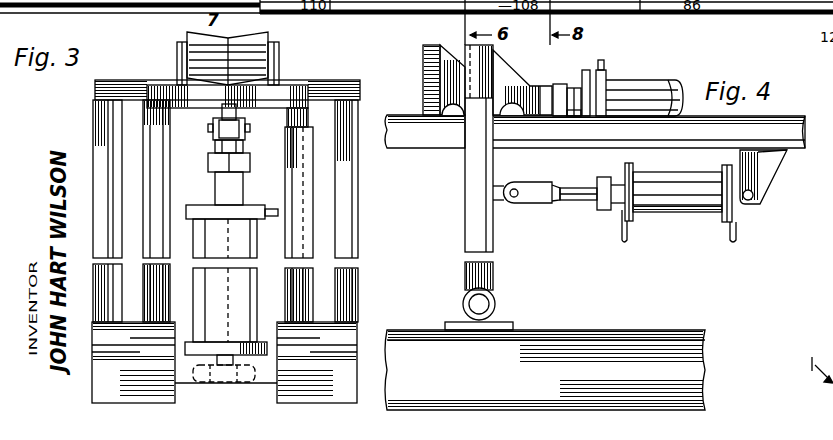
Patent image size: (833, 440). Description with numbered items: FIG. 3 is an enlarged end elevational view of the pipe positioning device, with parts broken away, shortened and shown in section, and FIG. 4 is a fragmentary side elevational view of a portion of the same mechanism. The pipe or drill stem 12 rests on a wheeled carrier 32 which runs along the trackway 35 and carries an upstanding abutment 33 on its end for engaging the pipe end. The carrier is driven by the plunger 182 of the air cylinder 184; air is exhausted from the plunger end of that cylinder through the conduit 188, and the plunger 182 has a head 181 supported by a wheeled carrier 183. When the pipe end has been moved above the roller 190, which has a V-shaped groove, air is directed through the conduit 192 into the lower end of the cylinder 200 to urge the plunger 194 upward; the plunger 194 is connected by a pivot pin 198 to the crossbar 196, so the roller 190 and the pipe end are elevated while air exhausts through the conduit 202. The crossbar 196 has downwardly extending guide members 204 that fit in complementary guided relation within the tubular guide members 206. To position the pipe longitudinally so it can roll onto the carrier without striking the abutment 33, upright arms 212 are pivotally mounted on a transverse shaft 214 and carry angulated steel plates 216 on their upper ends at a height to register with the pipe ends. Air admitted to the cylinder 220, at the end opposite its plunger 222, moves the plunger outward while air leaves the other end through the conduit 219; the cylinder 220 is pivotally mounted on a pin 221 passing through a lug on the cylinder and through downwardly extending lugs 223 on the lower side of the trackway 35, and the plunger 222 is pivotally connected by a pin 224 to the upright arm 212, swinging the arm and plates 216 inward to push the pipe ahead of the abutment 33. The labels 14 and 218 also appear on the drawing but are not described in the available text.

In FIG. 4, the pipe or drill stem 12 is at (628, 330).
In FIG. 3, the upper frame beam 14 is at (352, 242).
In FIG. 4, the upper frame beam 14 is at (806, 138).
In FIG. 4, the wheeled carrier 32 is at (425, 115).
In FIG. 4, the upstanding abutment 33 is at (425, 46).
In FIG. 3, the trackway 35 is at (178, 64).
In FIG. 4, the trackway 35 is at (745, 120).
In FIG. 4, the head 181 is at (577, 118).
In FIG. 4, the plunger 182 is at (552, 84).
In FIG. 4, the wheeled carrier 183 is at (490, 100).
In FIG. 4, the air cylinder 184 is at (633, 86).
In FIG. 4, the conduit 188 is at (601, 68).
In FIG. 3, the roller 190 is at (192, 40).
In FIG. 3, the conduit 192 is at (272, 345).
In FIG. 3, the plunger 194 is at (229, 178).
In FIG. 3, the crossbar 196 is at (272, 98).
In FIG. 3, the pivot pin 198 is at (213, 127).
In FIG. 3, the cylinder 200 is at (262, 228).
In FIG. 3, the conduit 202 is at (272, 204).
In FIG. 3, the guide members 204 is at (146, 118).
In FIG. 3, the tubular guide members 206 is at (143, 150).
In FIG. 4, the upright arm 212 is at (493, 266).
In FIG. 4, the transverse shaft 214 is at (490, 304).
In FIG. 4, the angulated steel plate 216 is at (478, 57).
In FIG. 4, the pin 218 is at (738, 231).
In FIG. 4, the conduit 219 is at (626, 236).
In FIG. 4, the cylinder 220 is at (652, 212).
In FIG. 4, the pin 221 is at (758, 199).
In FIG. 4, the plunger 222 is at (586, 188).
In FIG. 4, the downwardly extending lugs 223 is at (776, 174).
In FIG. 4, the pin 224 is at (515, 198).